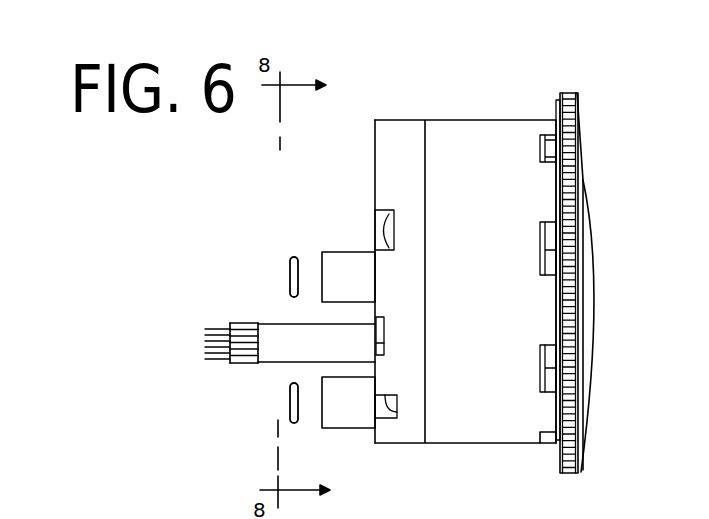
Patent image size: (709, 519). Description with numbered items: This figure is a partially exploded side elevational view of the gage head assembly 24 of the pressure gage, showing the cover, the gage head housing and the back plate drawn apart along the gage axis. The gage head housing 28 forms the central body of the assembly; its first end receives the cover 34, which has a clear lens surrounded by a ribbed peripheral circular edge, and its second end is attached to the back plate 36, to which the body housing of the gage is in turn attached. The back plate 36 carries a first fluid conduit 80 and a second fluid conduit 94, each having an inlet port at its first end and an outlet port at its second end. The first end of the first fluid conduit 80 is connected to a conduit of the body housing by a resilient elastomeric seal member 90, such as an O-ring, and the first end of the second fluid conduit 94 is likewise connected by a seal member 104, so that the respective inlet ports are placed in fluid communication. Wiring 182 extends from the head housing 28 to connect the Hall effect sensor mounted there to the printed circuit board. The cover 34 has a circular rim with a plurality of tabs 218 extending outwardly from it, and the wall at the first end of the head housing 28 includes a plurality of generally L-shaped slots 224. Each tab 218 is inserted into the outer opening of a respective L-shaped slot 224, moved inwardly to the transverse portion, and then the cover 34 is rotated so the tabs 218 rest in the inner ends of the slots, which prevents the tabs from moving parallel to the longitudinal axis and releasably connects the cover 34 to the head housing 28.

The gage head assembly 24 is at (547, 68).
The gage head housing 28 is at (458, 135).
The cover 34 is at (577, 93).
The back plate 36 is at (395, 120).
The first fluid conduit 80 is at (343, 252).
The resilient elastomeric seal member 90 is at (285, 262).
The second fluid conduit 94 is at (350, 428).
The seal member 104 is at (290, 393).
The wiring 182 is at (270, 328).
The tabs 218 is at (555, 373).
The L-shaped slots 224 is at (550, 234).